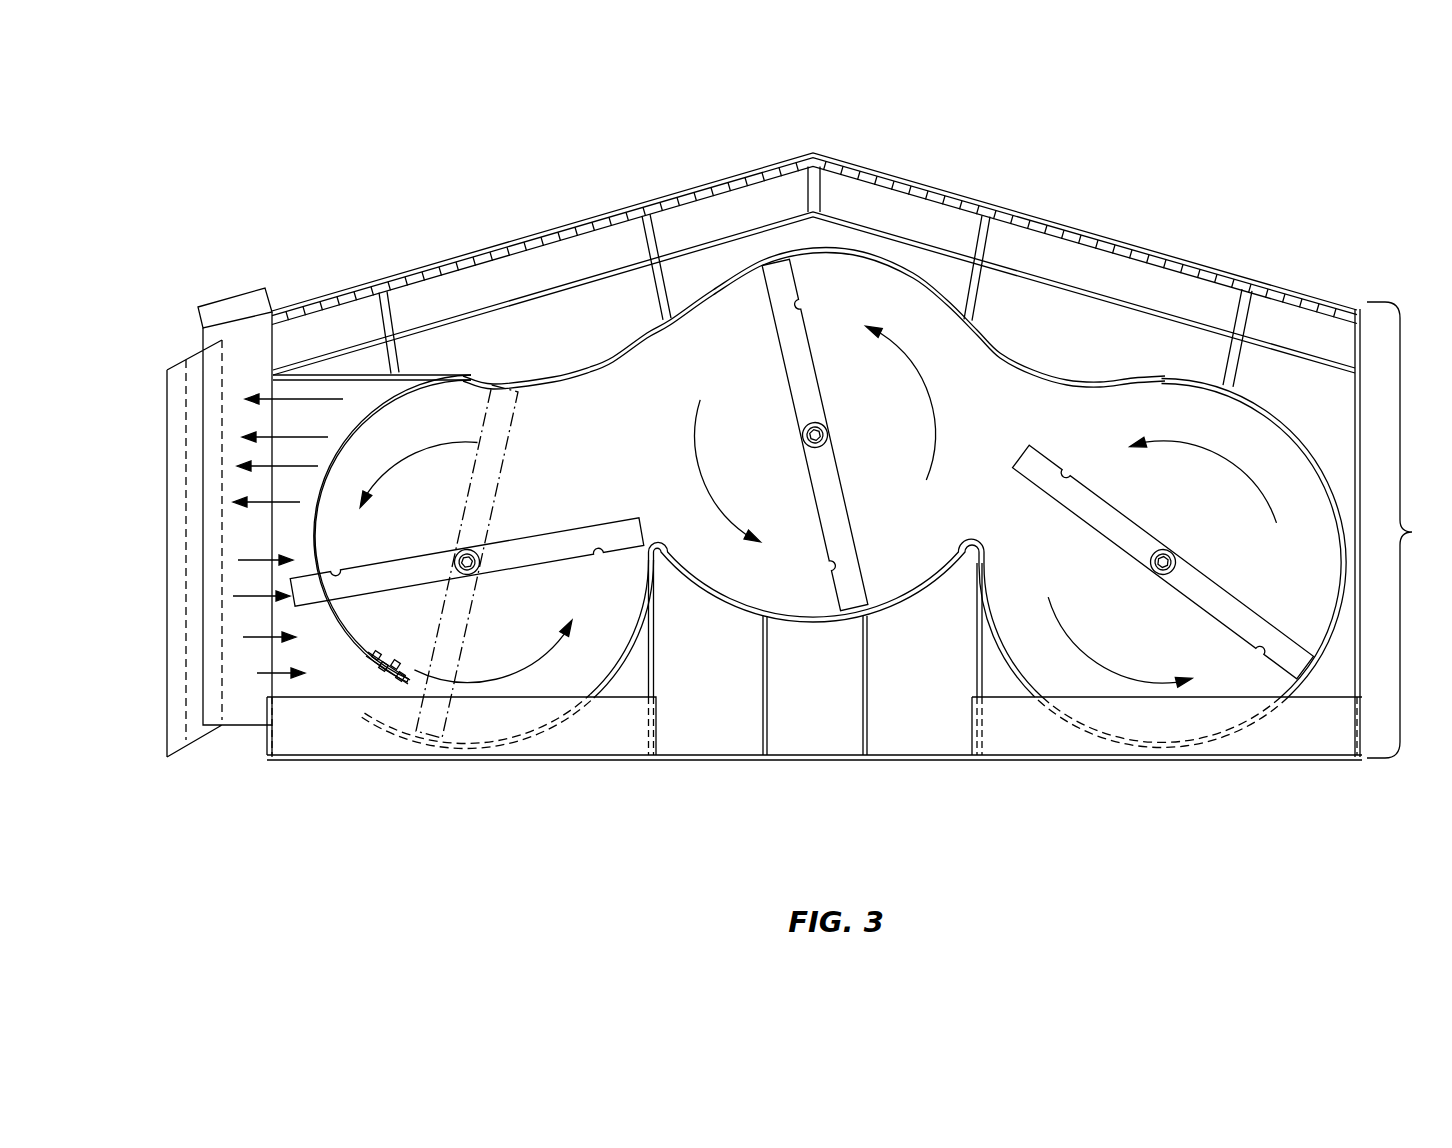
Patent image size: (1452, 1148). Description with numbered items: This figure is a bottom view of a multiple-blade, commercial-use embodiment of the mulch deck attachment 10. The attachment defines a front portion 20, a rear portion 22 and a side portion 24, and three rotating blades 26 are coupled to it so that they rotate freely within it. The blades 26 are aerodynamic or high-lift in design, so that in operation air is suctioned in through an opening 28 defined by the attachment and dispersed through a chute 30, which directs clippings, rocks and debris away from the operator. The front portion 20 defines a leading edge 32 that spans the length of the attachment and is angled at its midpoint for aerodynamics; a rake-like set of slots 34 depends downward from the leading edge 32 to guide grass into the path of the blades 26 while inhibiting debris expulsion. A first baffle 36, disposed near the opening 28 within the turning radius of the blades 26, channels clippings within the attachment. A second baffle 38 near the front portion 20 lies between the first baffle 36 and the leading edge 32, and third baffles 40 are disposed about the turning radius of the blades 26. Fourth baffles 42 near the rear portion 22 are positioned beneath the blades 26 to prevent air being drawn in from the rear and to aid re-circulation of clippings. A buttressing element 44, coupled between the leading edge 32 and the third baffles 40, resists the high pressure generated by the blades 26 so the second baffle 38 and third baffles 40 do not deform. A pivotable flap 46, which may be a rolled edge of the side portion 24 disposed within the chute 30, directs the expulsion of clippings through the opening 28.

The mulch deck attachment 10 is at (1409, 530).
The front portion 20 is at (812, 147).
The rear portion 22 is at (803, 763).
The side portion 24 is at (1373, 607).
The blades 26 is at (593, 535).
The opening 28 is at (293, 655).
The chute 30 is at (247, 337).
The leading edge 32 is at (1357, 308).
The rake like set of slots 34 is at (1145, 261).
The first baffle 36 is at (345, 648).
The second baffle 38 is at (475, 305).
The third baffles 40 is at (612, 352).
The fourth baffles 42 is at (607, 713).
The buttressing element 44 is at (978, 246).
The flap 46 is at (177, 570).